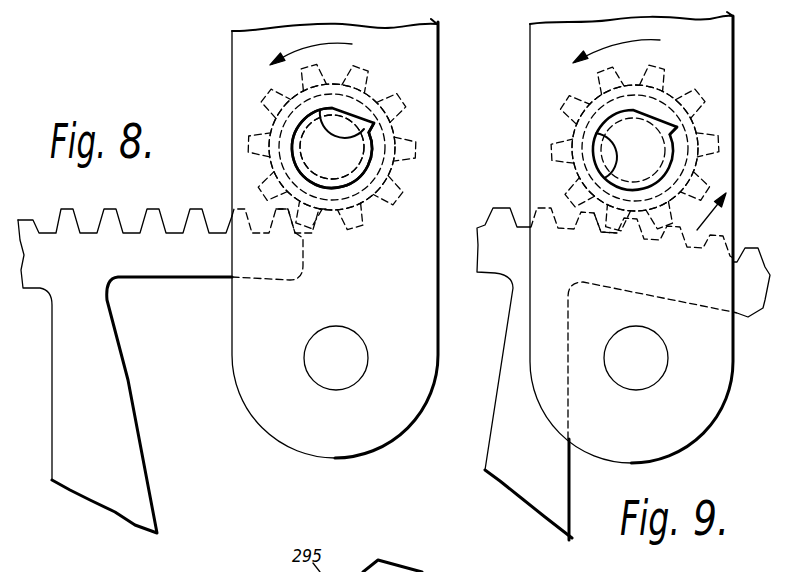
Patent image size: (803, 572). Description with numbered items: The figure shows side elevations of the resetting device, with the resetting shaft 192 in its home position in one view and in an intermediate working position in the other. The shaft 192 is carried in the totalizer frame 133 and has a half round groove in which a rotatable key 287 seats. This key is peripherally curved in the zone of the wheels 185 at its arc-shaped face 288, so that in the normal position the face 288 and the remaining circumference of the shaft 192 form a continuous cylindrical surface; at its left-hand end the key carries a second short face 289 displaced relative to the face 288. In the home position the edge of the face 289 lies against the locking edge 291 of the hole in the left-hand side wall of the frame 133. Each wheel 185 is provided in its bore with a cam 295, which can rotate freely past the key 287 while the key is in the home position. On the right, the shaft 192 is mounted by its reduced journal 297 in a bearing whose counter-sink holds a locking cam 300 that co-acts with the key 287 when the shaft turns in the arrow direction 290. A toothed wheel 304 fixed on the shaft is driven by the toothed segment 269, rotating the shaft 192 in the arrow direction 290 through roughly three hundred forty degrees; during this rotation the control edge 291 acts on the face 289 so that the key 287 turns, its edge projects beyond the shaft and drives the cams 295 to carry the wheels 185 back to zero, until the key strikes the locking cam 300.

In FIG. 8, the totalizer frame 133 is at (409, 403).
In FIG. 9, the totalizer frame 133 is at (715, 395).
In FIG. 8, the wheel 185 is at (396, 108).
In FIG. 9, the wheel 185 is at (690, 72).
In FIG. 8, the toothed wheel 304 is at (396, 147).
In FIG. 9, the toothed wheel 304 is at (681, 137).
In FIG. 8, the shaft 192 is at (343, 160).
In FIG. 8, the toothed segment 269 is at (117, 445).
In FIG. 9, the toothed segment 269 is at (500, 435).
In FIG. 8, the rotatable key 287 is at (353, 129).
In FIG. 9, the rotatable key 287 is at (609, 157).
In FIG. 8, the arc-shaped face 288 is at (372, 128).
In FIG. 9, the arc-shaped face 288 is at (597, 145).
In FIG. 8, the second short face 289 is at (323, 122).
In FIG. 9, the second short face 289 is at (600, 172).
In FIG. 8, the arrow direction 290 is at (327, 49).
In FIG. 9, the arrow direction 290 is at (756, 212).
In FIG. 8, the locking edge 291 is at (372, 125).
In FIG. 9, the locking edge 291 is at (676, 126).
In FIG. 8, the cam 295 is at (308, 186).
In FIG. 9, the cam 295 is at (610, 187).
In FIG. 8, the reduced journal 297 is at (362, 165).
In FIG. 8, the locking cam 300 is at (327, 112).
In FIG. 9, the locking cam 300 is at (613, 107).